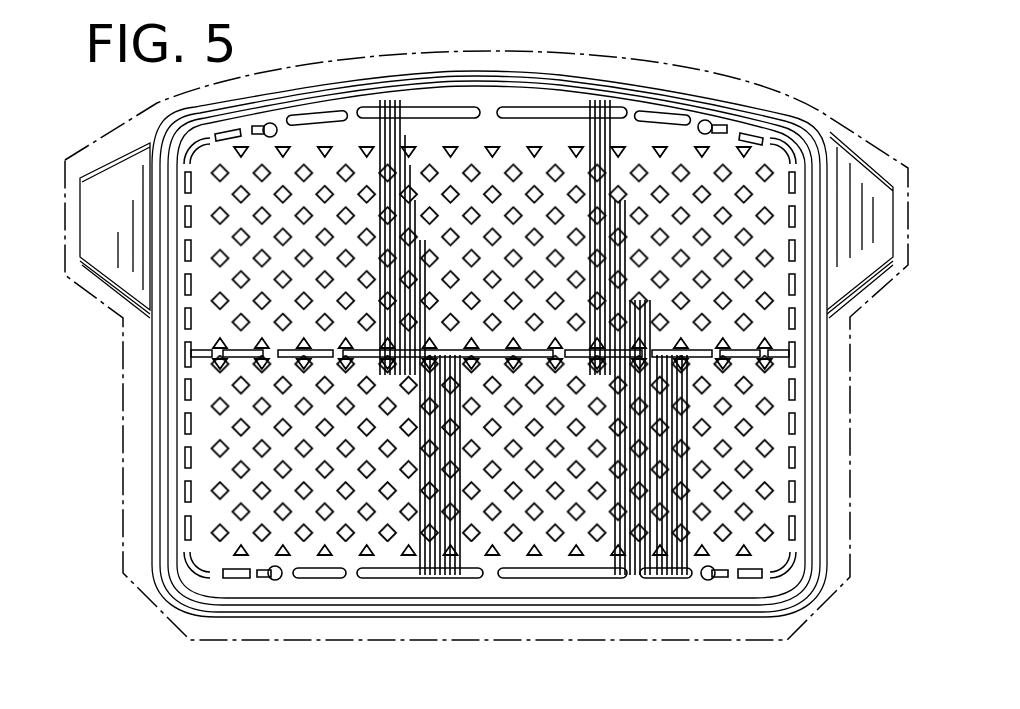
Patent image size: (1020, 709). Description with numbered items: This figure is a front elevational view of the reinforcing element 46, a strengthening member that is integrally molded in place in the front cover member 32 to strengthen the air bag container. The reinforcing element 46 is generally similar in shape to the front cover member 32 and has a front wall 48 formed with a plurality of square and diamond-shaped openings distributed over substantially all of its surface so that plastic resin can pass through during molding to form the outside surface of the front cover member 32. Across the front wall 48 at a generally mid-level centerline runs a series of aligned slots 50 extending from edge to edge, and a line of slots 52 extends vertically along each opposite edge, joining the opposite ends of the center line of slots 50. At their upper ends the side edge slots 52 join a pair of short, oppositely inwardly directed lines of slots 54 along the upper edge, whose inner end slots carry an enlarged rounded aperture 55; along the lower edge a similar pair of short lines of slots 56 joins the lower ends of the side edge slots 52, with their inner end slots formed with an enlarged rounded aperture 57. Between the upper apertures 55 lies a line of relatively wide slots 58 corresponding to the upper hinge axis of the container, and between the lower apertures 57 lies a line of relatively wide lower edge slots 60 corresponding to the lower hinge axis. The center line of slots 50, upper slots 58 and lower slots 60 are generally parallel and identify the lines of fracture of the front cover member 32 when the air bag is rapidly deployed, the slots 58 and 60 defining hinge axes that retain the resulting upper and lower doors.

The front cover member 32 is at (510, 645).
The reinforcing element 46 is at (345, 620).
The front wall 48 is at (530, 464).
The center line of slots 50 is at (243, 358).
The side edge slots 52 is at (186, 497).
The upper edge lines of slots 54 is at (222, 132).
The enlarged rounded aperture 55 is at (273, 125).
The lower edge lines of slots 56 is at (239, 580).
The enlarged rounded aperture 57 is at (275, 581).
The upper line of wide slots 58 is at (463, 108).
The lower edge slots 60 is at (423, 580).